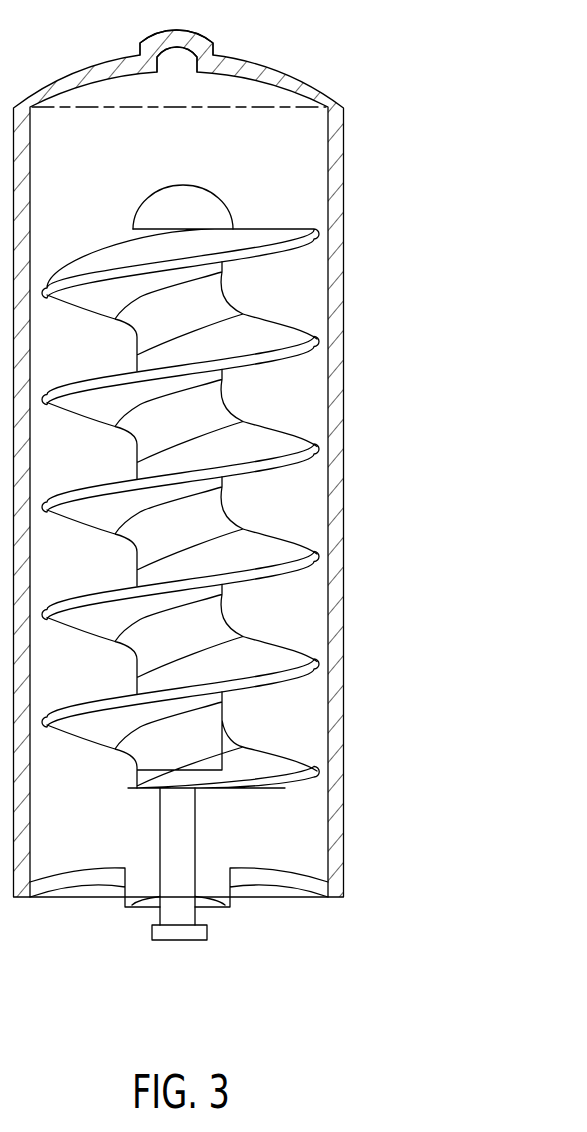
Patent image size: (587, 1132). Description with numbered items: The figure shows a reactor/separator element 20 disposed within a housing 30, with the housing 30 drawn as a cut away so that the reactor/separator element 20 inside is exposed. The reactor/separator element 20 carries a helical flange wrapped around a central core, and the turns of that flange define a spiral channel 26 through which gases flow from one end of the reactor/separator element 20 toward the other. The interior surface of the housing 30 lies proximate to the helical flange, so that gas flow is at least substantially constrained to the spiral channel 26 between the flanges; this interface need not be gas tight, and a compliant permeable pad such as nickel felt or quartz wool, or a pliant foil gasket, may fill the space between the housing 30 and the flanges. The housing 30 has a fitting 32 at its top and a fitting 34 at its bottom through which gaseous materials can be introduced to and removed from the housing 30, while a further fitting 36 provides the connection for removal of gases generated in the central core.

The reactor/separator element 20 is at (246, 486).
The spiral channel 26 is at (87, 569).
The housing 30 is at (335, 615).
The fitting 32 is at (152, 43).
The fitting 34 is at (208, 902).
The fitting 36 is at (180, 927).